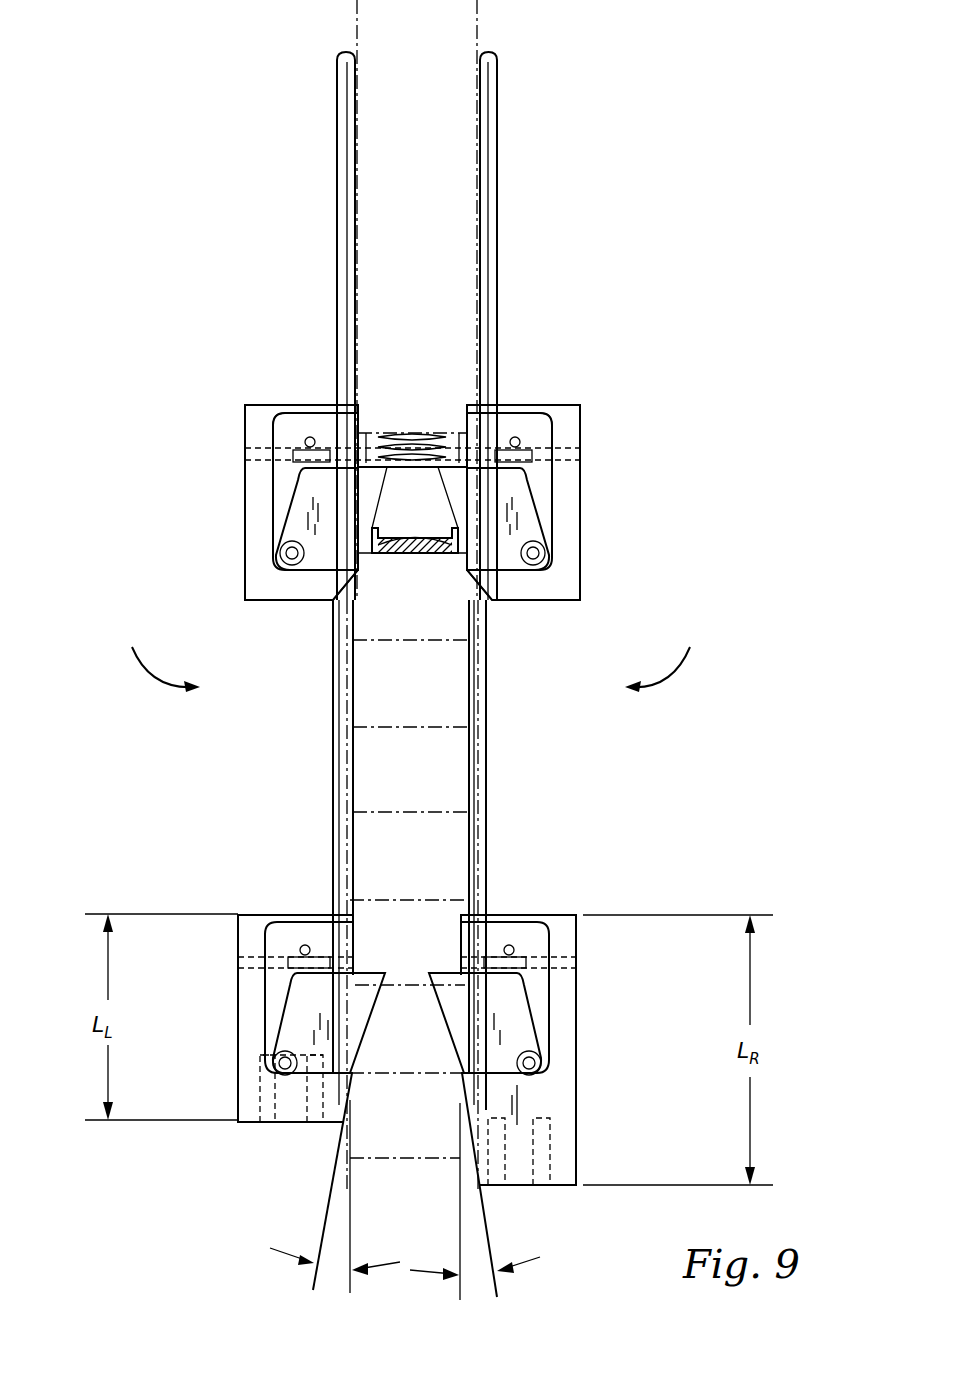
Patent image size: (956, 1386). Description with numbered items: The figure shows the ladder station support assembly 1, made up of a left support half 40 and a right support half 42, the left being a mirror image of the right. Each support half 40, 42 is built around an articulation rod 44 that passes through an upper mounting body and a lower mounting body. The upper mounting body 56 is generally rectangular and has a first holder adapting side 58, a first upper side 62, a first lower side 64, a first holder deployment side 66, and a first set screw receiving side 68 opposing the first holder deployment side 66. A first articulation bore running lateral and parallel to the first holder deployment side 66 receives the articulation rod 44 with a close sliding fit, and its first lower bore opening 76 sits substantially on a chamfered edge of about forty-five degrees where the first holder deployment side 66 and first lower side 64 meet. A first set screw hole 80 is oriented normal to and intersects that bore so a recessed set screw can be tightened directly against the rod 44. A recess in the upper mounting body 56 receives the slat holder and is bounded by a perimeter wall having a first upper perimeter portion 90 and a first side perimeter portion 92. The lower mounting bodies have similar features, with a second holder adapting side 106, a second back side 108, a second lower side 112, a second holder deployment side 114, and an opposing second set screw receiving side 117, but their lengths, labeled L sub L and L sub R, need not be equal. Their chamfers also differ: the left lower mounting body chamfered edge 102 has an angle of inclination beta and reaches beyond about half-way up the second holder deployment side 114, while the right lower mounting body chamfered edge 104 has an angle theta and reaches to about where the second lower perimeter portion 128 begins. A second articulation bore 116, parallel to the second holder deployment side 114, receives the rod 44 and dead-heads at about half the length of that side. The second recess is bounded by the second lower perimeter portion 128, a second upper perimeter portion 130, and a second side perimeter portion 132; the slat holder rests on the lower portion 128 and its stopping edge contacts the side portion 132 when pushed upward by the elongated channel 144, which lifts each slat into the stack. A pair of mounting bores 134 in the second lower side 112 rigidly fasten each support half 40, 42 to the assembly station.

The ladder station support assembly 1 is at (128, 122).
The left support half 40 is at (152, 655).
The right support half 42 is at (670, 655).
The articulation rod 44 is at (337, 188).
The right upper holder assembly mounting body 56 is at (245, 540).
The first holder adapting side 58 is at (288, 425).
The first upper side 62 is at (288, 405).
The first lower side 64 is at (290, 600).
The first holder deployment side 66 is at (460, 432).
The first set screw receiving side 68 is at (245, 572).
The first lower bore opening 76 is at (333, 608).
The first set screw hole 80 is at (260, 455).
The first upper perimeter portion 90 is at (325, 410).
The first side perimeter portion 92 is at (273, 500).
The left lower mounting body chamfered edge 102 is at (352, 1105).
The right lower mounting body chamfered edge 104 is at (463, 1178).
The second holder adapting side 106 is at (252, 1125).
The second back side 108 is at (262, 920).
The second lower side 112 is at (265, 1122).
The second holder deployment side 114 is at (463, 927).
The second articulation bore 116 is at (317, 920).
The second set screw receiving side 117 is at (238, 928).
The second lower perimeter portion 128 is at (275, 1085).
The second upper perimeter portion 130 is at (238, 957).
The second side perimeter portion 132 is at (272, 990).
The mounting bores 134 is at (318, 1122).
The elongated channel 144 is at (422, 553).